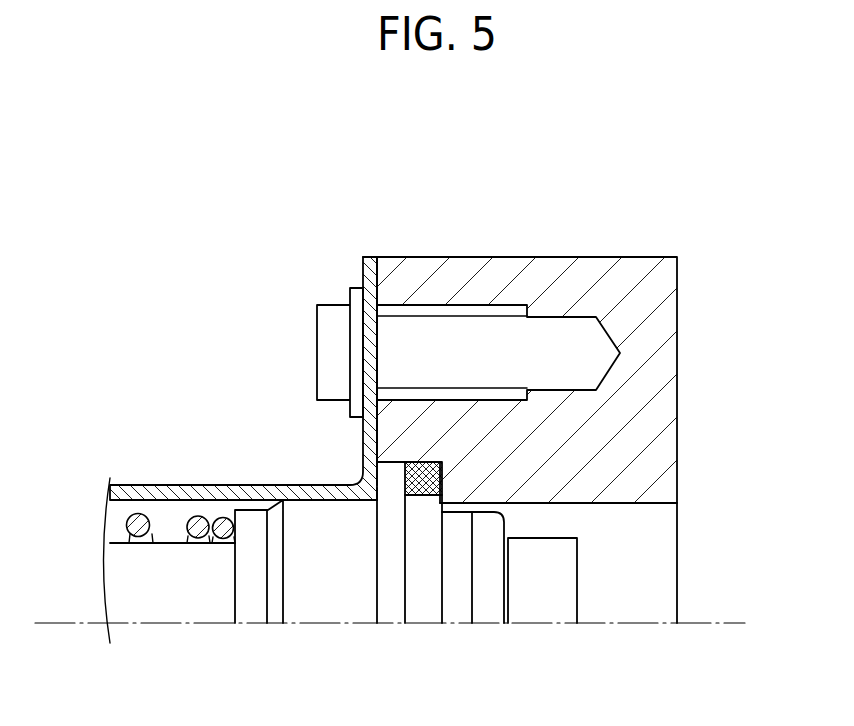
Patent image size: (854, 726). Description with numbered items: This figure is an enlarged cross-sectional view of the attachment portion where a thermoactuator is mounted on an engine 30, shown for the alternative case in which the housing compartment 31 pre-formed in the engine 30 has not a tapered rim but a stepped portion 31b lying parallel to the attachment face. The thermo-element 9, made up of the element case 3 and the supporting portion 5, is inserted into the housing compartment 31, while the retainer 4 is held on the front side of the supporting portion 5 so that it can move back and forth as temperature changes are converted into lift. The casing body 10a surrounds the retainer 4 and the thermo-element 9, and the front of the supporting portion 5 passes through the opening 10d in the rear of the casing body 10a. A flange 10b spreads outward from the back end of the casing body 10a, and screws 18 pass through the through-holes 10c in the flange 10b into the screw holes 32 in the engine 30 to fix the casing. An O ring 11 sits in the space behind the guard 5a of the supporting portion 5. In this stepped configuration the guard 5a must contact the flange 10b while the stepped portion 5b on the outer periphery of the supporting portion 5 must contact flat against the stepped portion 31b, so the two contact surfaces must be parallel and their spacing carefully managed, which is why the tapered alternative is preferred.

The element case 3 is at (553, 601).
The retainer 4 is at (130, 600).
The supporting portion 5 is at (338, 612).
The guard 5a is at (390, 612).
The stepped portion 5b is at (465, 512).
The thermo-element 9 is at (624, 551).
The casing body 10a is at (173, 483).
The flange 10b is at (360, 280).
The through-holes 10c is at (366, 390).
The opening 10d is at (380, 500).
The O ring 11 is at (395, 483).
The screws 18 is at (330, 358).
The engine 30 is at (615, 300).
The housing compartment 31 is at (645, 504).
The stepped portion 31b is at (405, 462).
The screw holes 32 is at (473, 398).